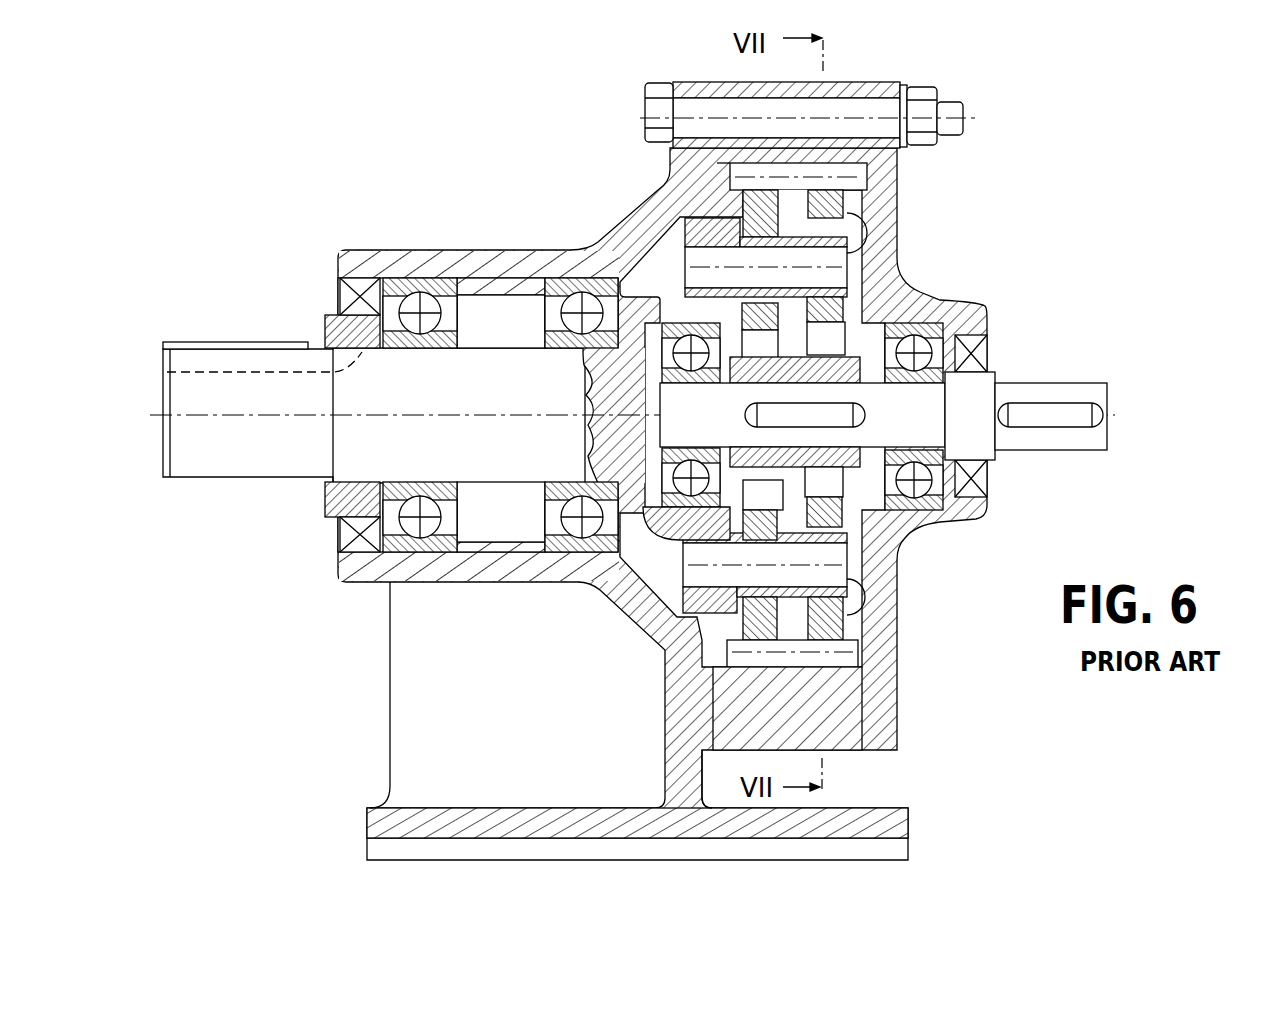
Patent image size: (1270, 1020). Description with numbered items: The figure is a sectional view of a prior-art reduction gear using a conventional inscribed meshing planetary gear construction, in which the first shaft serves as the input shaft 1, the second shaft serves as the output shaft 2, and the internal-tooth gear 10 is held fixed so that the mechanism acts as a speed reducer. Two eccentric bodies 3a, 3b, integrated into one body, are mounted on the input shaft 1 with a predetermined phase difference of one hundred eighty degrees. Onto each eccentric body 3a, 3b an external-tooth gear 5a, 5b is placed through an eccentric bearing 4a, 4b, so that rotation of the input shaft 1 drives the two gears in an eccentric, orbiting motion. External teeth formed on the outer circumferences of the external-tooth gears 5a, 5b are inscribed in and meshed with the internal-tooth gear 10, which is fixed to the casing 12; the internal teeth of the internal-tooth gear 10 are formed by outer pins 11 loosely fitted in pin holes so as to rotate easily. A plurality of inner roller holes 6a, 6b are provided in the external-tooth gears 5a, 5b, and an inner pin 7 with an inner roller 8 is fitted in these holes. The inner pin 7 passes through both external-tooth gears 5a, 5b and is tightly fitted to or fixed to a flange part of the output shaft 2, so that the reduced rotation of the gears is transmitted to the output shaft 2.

The input shaft 1 is at (1021, 437).
The output shaft 2 is at (205, 462).
The eccentric body 3a is at (890, 353).
The eccentric body 3b is at (760, 498).
The eccentric bearing 4a is at (827, 333).
The eccentric bearing 4b is at (745, 548).
The external-tooth gear 5a is at (860, 213).
The external-tooth gear 5b is at (745, 625).
The inner roller hole 6a is at (822, 232).
The inner roller hole 6b is at (723, 303).
The inner pin 7 is at (860, 580).
The inner roller 8 is at (893, 607).
The internal-tooth gear 10 is at (848, 82).
The outer pin 11 is at (735, 170).
The casing 12 is at (877, 193).